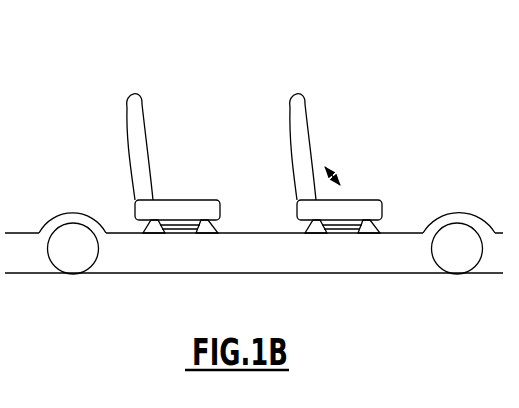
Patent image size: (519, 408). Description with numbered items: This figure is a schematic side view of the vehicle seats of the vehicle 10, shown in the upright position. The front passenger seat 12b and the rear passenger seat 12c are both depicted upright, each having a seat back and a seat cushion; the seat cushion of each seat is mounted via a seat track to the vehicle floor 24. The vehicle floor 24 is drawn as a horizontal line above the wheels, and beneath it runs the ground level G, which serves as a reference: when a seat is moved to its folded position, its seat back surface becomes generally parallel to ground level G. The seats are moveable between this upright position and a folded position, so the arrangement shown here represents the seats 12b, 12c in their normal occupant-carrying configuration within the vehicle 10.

The vehicle 10 is at (254, 178).
The front passenger seat 12b is at (344, 146).
The rear passenger seat 12c is at (170, 146).
The vehicle floor 24 is at (246, 233).
The ground level G is at (137, 273).